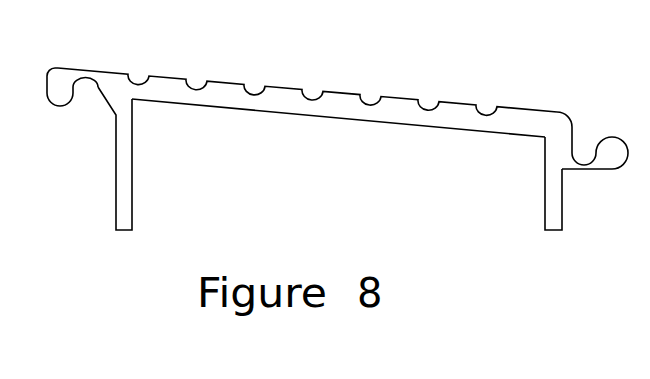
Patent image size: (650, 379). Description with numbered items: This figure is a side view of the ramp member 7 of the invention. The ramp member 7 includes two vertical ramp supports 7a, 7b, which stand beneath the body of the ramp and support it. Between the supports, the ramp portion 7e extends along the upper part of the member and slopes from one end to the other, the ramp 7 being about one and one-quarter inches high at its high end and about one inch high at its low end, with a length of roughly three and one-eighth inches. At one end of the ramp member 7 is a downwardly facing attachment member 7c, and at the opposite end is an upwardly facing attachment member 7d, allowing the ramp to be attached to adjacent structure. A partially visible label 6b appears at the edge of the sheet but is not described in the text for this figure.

The ramp member 7 is at (332, 130).
The vertical ramp support 7a is at (116, 195).
The vertical ramp support 7b is at (562, 207).
The downwardly facing attachment member 7c is at (47, 81).
The upwardly facing attachment member 7d is at (610, 136).
The ramp portion 7e is at (288, 86).
The adjacent member 6b is at (9, 182).